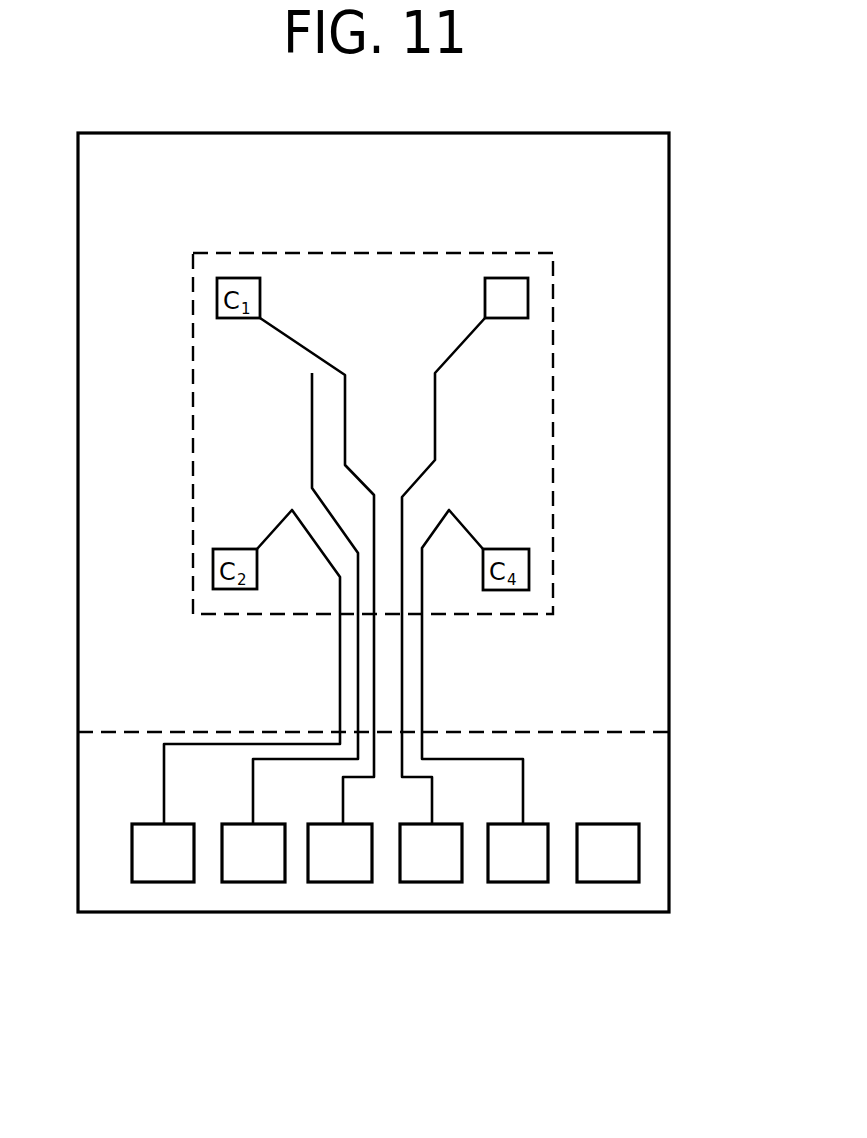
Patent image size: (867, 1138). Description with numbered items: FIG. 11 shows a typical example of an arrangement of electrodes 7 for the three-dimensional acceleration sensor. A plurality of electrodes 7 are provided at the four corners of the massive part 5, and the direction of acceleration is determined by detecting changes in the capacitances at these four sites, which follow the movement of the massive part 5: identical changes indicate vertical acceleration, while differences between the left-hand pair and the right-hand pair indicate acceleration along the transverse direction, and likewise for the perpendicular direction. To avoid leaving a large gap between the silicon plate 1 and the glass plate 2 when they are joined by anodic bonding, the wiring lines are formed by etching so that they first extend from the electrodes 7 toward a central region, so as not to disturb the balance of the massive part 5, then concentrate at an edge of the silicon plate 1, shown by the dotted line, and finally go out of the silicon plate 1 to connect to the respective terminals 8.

The silicon plate 1 is at (635, 732).
The glass plate 2 is at (669, 845).
The massive part 5 is at (553, 453).
The electrode 7 is at (522, 293).
The terminal 8 is at (508, 868).